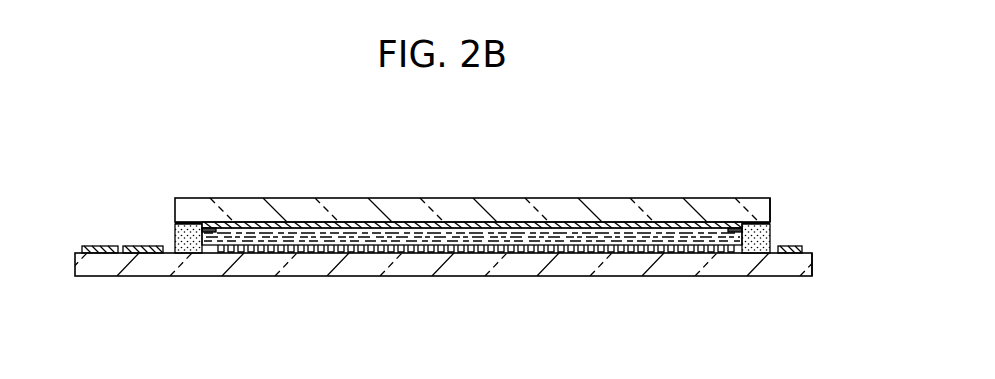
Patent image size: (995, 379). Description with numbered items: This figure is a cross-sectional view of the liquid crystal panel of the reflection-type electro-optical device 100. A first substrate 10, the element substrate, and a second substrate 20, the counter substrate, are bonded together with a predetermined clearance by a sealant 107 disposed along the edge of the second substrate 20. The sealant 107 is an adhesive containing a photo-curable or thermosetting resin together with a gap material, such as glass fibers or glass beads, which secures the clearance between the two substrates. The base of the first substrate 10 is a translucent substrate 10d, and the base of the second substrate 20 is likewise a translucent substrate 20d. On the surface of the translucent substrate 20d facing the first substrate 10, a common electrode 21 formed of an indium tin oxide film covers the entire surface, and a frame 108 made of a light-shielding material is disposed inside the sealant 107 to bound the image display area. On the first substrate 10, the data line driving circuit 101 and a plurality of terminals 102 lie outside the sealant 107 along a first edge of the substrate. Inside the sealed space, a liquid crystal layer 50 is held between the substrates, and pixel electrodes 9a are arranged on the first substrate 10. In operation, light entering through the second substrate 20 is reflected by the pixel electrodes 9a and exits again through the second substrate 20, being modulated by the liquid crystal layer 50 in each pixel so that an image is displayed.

The electro-optical device 100 is at (702, 117).
The first substrate 10 is at (773, 279).
The translucent substrate 10d is at (812, 257).
The second substrate 20 is at (712, 197).
The translucent substrate 20d is at (771, 200).
The common electrode 21 is at (360, 227).
The frame 108 is at (215, 225).
The liquid crystal layer 50 is at (569, 237).
The pixel electrodes 9a is at (380, 252).
The sealant 107 is at (182, 248).
The data line driving circuit 101 is at (138, 247).
The terminals 102 is at (93, 247).